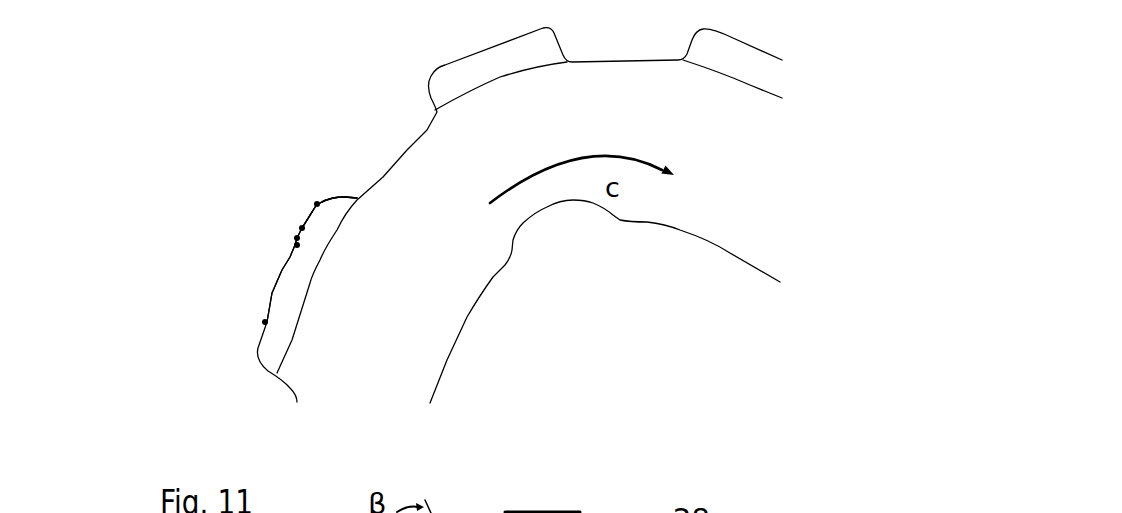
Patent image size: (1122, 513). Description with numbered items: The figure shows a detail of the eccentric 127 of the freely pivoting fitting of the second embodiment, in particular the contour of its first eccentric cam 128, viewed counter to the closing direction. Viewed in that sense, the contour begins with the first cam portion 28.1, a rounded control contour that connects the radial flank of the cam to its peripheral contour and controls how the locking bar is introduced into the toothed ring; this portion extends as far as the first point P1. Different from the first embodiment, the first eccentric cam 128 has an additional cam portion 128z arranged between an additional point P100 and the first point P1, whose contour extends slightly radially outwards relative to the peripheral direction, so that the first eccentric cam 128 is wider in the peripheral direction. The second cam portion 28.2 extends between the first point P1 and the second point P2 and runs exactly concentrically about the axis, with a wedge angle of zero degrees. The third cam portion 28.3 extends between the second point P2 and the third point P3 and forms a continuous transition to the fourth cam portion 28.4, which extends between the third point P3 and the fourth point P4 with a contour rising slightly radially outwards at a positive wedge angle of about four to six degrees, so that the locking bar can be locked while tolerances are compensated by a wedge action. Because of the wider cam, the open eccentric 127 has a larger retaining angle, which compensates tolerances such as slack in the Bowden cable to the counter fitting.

The eccentric 127 is at (397, 348).
The first eccentric cam 128 is at (265, 348).
The additional cam portion 128z is at (302, 226).
The first cam portion 28.1 is at (338, 198).
The second cam portion 28.2 is at (300, 227).
The third cam portion 28.3 is at (296, 240).
The fourth cam portion 28.4 is at (272, 293).
The additional point P100 is at (316, 202).
The first point P1 is at (301, 229).
The second point P2 is at (296, 237).
The third point P3 is at (296, 245).
The fourth point P4 is at (264, 322).